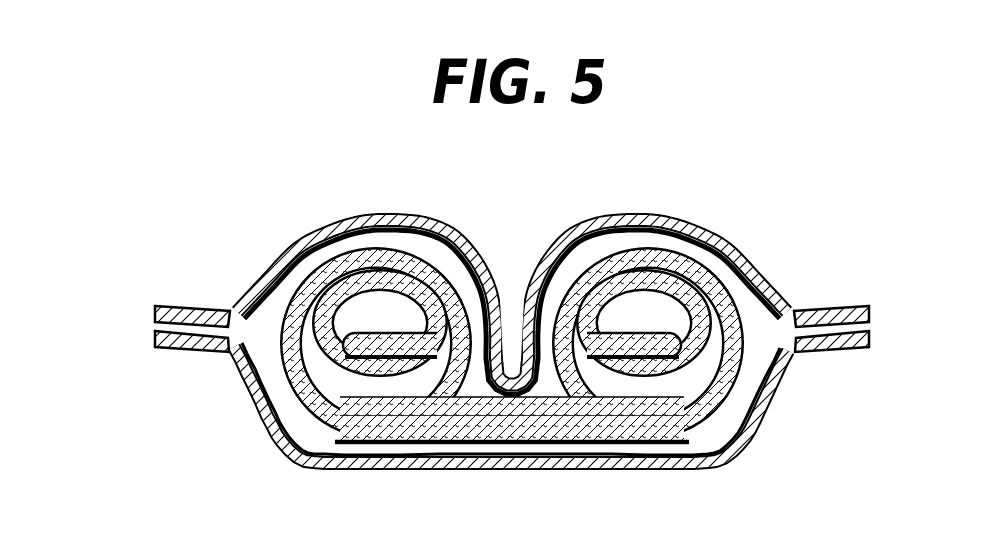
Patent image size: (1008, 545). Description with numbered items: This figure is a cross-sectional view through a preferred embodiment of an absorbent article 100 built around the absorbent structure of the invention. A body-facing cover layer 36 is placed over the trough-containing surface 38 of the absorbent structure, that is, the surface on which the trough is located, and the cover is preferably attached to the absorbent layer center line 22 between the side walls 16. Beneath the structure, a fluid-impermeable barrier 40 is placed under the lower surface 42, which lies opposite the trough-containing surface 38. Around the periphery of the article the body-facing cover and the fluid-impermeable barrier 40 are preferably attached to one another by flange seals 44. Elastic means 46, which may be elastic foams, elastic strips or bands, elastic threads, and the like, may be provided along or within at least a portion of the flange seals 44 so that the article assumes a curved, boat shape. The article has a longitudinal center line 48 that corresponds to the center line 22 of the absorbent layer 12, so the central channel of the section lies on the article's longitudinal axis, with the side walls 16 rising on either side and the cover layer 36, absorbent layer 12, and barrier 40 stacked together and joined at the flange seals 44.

The absorbent article 100 is at (738, 186).
The absorbent layer 12 is at (403, 403).
The side walls 16 is at (747, 360).
The absorbent layer center line 22 is at (512, 398).
The body-facing cover layer 36 is at (427, 216).
The trough-containing surface 38 is at (373, 250).
The fluid-impermeable barrier 40 is at (737, 470).
The lower surface 42 is at (633, 447).
The flange seals 44 is at (157, 312).
The elastic means 46 is at (188, 333).
The longitudinal center line 48 is at (510, 305).